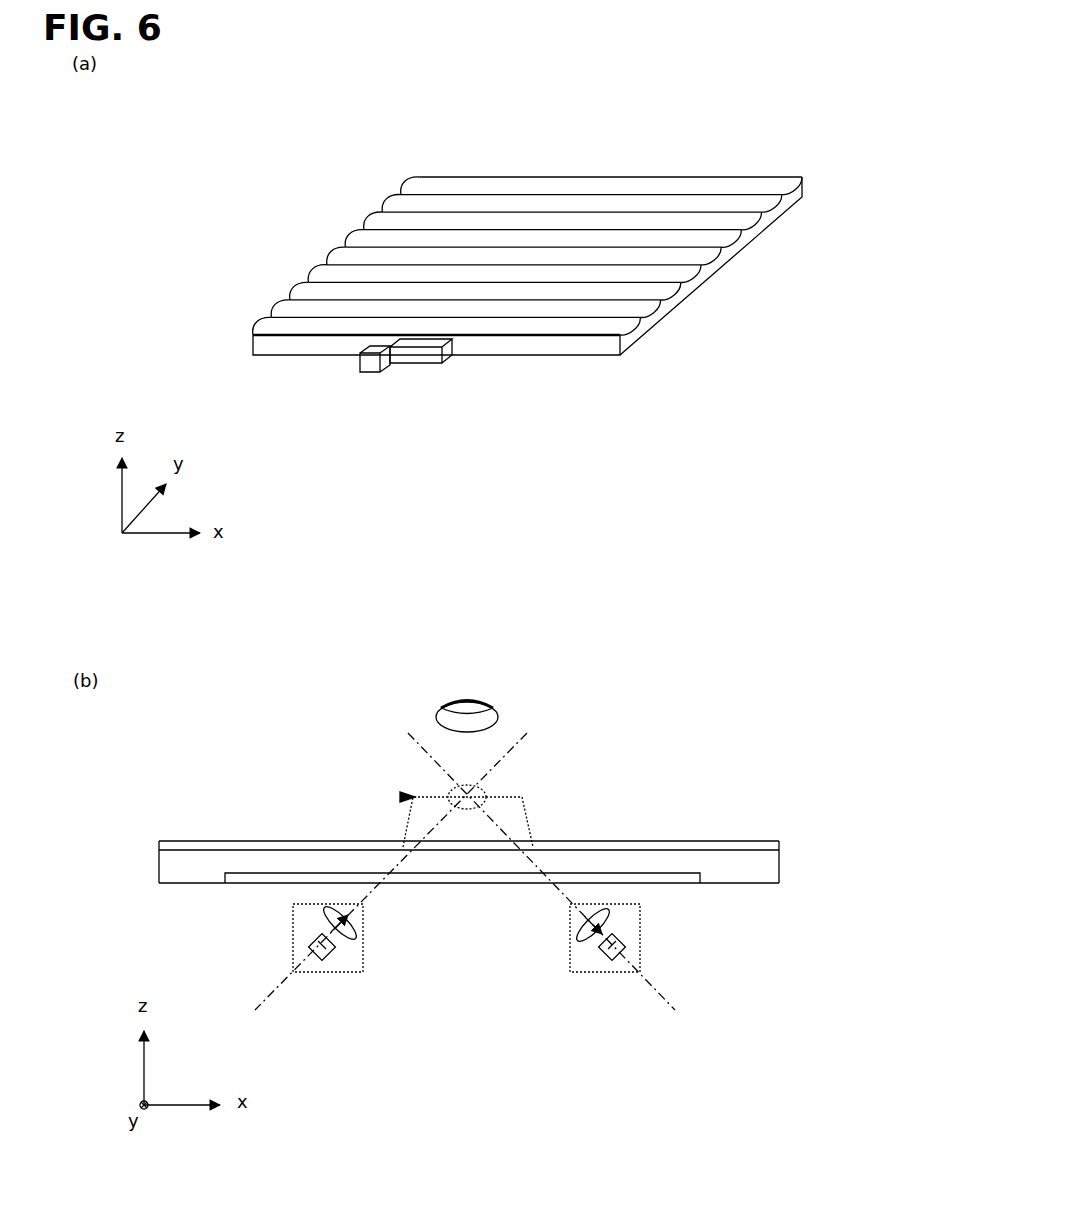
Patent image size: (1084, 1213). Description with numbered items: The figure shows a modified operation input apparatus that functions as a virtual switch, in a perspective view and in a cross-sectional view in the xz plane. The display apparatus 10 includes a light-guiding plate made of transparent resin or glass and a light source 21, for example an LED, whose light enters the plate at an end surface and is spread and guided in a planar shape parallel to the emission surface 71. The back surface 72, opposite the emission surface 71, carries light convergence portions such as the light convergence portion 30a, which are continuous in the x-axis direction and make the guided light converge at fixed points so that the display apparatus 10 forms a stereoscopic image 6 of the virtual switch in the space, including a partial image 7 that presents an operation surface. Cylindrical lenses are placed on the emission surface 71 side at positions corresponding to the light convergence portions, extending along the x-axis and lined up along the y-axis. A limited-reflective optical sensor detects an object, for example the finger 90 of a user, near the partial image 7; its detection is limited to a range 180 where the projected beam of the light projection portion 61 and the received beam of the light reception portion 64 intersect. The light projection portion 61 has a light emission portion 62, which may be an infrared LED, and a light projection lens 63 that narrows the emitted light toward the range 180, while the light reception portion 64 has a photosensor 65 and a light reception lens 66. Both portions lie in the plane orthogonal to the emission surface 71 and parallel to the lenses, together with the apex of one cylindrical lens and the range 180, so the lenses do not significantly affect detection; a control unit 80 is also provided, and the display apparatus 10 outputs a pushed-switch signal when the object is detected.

The light source 21 is at (442, 363).
The control unit 80 is at (360, 371).
The display apparatus 10 is at (488, 842).
The partial image 7 is at (401, 797).
The image 6 is at (526, 805).
The range 180 is at (489, 791).
The finger 90 is at (499, 714).
The emission surface 71 is at (715, 850).
The back surface 72 is at (715, 884).
The light convergence portion 30a is at (602, 872).
The light projection portion 61 is at (317, 946).
The light emission portion 62 is at (335, 958).
The light projection lens 63 is at (361, 934).
The light reception portion 64 is at (617, 949).
The photosensor 65 is at (600, 956).
The light reception lens 66 is at (574, 934).